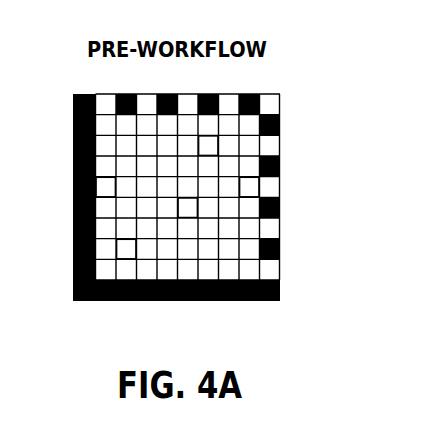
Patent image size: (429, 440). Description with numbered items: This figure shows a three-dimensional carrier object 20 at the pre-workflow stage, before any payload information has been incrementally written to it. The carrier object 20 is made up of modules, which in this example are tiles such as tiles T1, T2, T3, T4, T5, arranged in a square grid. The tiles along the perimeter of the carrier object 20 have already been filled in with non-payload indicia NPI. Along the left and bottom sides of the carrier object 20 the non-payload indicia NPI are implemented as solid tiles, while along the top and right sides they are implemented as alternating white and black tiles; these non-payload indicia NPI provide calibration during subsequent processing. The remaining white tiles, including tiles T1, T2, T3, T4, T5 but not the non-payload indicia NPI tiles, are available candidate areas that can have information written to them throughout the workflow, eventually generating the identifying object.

The 3D carrier object 20 is at (203, 192).
The non-payload indicia NPI is at (66, 106).
The tile T1 is at (247, 188).
The tile T2 is at (128, 252).
The tile T3 is at (128, 188).
The tile T4 is at (188, 212).
The tile T5 is at (203, 147).